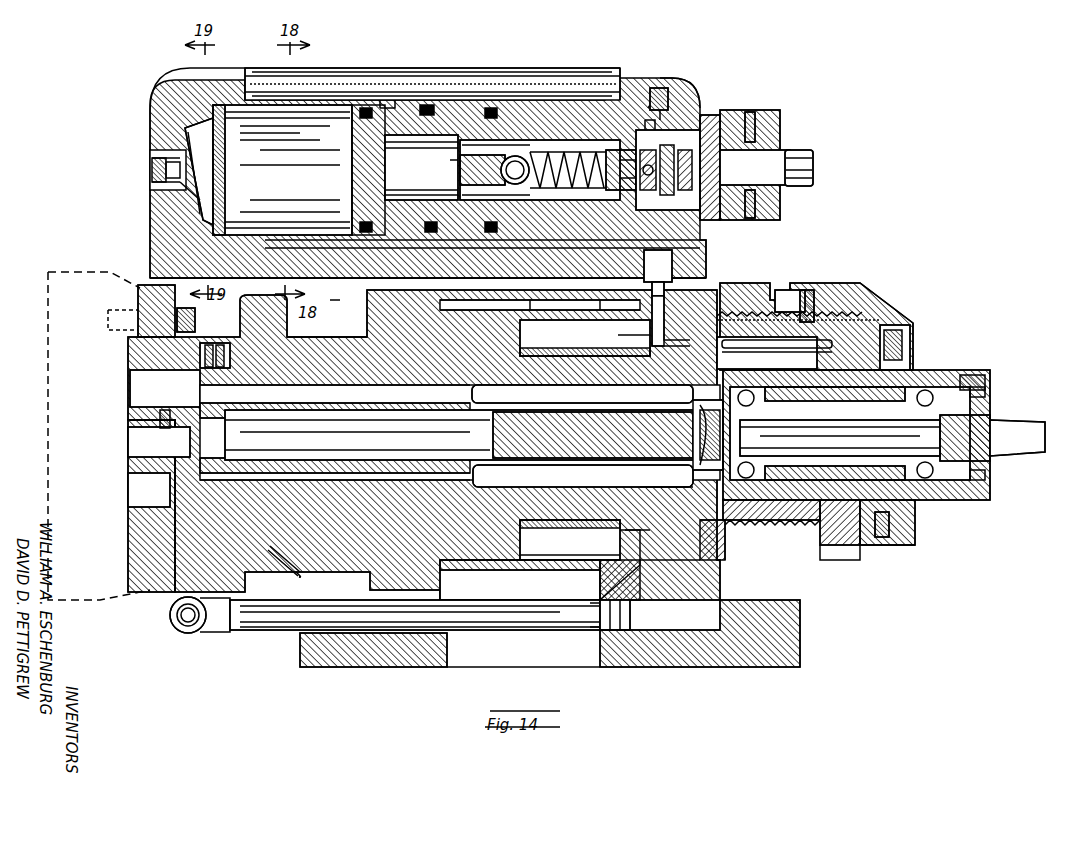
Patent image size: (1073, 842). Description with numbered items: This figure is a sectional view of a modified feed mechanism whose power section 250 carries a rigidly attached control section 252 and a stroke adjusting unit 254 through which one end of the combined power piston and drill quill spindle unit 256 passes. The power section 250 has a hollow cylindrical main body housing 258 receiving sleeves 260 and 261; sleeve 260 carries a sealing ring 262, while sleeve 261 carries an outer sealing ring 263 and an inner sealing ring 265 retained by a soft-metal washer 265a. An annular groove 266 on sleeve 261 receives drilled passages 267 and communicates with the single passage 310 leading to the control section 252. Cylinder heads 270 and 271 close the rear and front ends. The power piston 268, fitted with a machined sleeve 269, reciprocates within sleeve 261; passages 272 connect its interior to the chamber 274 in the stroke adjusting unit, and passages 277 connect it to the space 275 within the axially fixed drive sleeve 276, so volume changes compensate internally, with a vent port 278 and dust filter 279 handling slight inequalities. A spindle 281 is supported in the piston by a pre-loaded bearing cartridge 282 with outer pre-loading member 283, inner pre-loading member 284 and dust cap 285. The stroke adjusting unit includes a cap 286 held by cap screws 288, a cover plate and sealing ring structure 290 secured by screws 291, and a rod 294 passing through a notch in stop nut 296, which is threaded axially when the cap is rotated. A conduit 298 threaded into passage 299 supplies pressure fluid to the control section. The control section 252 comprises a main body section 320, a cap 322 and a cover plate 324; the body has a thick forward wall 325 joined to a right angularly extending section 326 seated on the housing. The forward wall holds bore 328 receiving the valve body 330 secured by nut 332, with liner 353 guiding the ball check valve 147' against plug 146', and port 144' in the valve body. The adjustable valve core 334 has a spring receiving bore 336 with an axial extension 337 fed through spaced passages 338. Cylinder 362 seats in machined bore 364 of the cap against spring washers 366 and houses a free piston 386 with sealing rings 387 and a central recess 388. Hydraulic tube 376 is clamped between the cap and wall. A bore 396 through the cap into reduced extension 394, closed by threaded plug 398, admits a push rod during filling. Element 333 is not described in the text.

The control section 252 is at (463, 57).
The cap 322 is at (150, 115).
The cylinder 362 is at (302, 88).
The hydraulic tube 376 is at (514, 92).
The cover plate 324 is at (388, 104).
The sealing rings 387 is at (428, 104).
The threaded plug 398 is at (152, 160).
The bore 396 is at (180, 183).
The reduced extension 394 is at (198, 195).
The machined bore 364 is at (255, 125).
The spring washers 366 is at (222, 130).
The free piston 386 is at (352, 180).
The central recess 388 is at (385, 198).
The oil chamber wall 333 is at (455, 180).
The ball check valve 147' is at (435, 179).
The valve body 330 is at (540, 158).
The plug 146' is at (496, 156).
The liner 353 is at (510, 192).
The port 144' is at (564, 189).
The spring receiving bore 336 is at (612, 190).
The axial extension 337 is at (628, 182).
The spaced passages 338 is at (640, 146).
The bore 328 is at (706, 115).
The main body section 320 is at (700, 94).
The nut 332 is at (755, 154).
The adjustable valve core 334 is at (808, 165).
The forward wall 325 is at (704, 238).
The power section 250 is at (731, 284).
The vent port 278 is at (173, 378).
The dust filter 279 is at (230, 362).
The space 275 is at (356, 444).
The passages 277 is at (396, 428).
The power piston 268 is at (538, 391).
The drive sleeve 276 is at (548, 486).
The passages 272 is at (692, 429).
The machined sleeve 269 is at (585, 338).
The drilled passages 267 is at (618, 336).
The annular groove 266 is at (562, 338).
The passage 310 is at (664, 292).
The right angularly extending section 326 is at (340, 300).
The cylinder head 270 is at (318, 345).
The sleeve 260 is at (500, 566).
The inner sealing ring 265 is at (668, 516).
The washer 265a is at (660, 494).
The sealing ring 262 is at (612, 574).
The outer sealing ring 263 is at (671, 576).
The sleeve 261 is at (722, 530).
The conduit 298 is at (548, 630).
The passage 299 is at (605, 632).
The main body housing 258 is at (722, 605).
The stroke adjusting unit 254 is at (859, 290).
The cylinder head 271 is at (786, 290).
The cap screws 288 is at (810, 290).
The cap 286 is at (894, 322).
The rod 294 is at (735, 343).
The chamber 274 is at (812, 361).
The combined power piston and drill quill spindle unit 256 is at (939, 352).
The spindle 281 is at (822, 434).
The bearing cartridge 282 is at (864, 405).
The outer pre-loading member 283 is at (945, 374).
The dust cap 285 is at (990, 396).
The inner pre-loading member 284 is at (990, 416).
The stop nut 296 is at (812, 528).
The screws 291 is at (915, 527).
The cover plate and sealing ring structure 290 is at (915, 543).